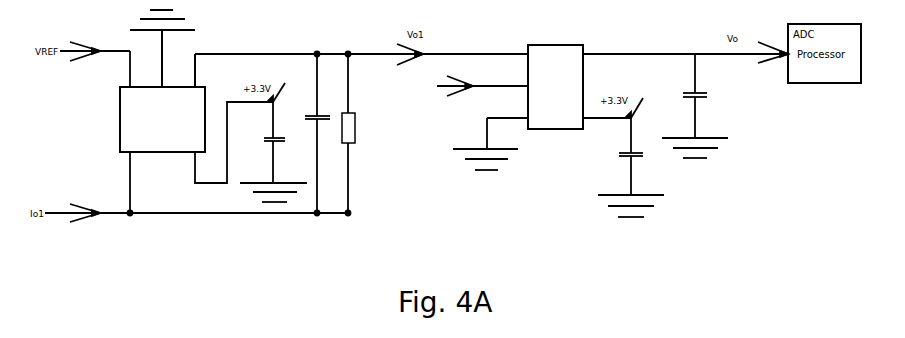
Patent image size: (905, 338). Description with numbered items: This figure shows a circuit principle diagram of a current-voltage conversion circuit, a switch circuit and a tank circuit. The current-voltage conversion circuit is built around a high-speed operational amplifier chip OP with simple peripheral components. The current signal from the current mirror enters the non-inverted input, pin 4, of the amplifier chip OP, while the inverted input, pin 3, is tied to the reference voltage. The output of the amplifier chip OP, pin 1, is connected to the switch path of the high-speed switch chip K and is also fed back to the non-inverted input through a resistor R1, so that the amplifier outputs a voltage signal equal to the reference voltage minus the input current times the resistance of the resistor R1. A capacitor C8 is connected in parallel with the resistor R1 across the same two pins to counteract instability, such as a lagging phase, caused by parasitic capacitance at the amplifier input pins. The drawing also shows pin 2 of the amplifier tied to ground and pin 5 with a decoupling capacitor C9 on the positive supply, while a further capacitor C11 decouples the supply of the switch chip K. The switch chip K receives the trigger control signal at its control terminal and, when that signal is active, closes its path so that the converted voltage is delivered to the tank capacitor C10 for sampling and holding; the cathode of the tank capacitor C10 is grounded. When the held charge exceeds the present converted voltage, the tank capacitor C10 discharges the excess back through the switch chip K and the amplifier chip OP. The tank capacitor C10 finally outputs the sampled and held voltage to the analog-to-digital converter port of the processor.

The pin 1 is at (361, 63).
The pin 2 is at (347, 82).
The pin 3 is at (329, 121).
The pin 4 is at (383, 146).
The pin 5 is at (491, 109).
The high-speed operational amplifier chip OP is at (162, 119).
The high-speed switch chip K is at (555, 87).
The capacitor C8 is at (316, 134).
The capacitor C9 is at (273, 152).
The tank capacitor C10 is at (695, 106).
The capacitor C11 is at (631, 167).
The resistor R1 is at (348, 134).